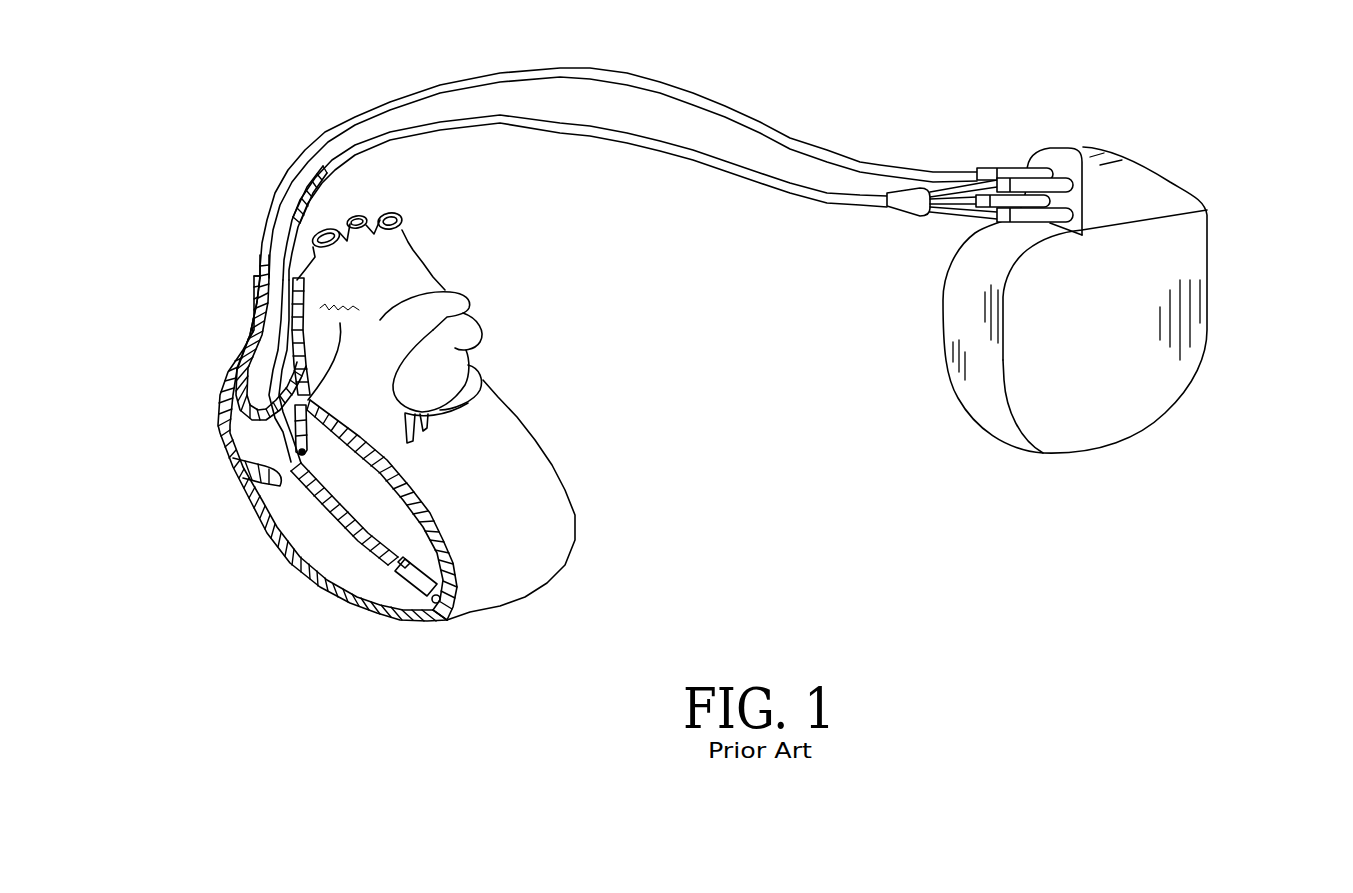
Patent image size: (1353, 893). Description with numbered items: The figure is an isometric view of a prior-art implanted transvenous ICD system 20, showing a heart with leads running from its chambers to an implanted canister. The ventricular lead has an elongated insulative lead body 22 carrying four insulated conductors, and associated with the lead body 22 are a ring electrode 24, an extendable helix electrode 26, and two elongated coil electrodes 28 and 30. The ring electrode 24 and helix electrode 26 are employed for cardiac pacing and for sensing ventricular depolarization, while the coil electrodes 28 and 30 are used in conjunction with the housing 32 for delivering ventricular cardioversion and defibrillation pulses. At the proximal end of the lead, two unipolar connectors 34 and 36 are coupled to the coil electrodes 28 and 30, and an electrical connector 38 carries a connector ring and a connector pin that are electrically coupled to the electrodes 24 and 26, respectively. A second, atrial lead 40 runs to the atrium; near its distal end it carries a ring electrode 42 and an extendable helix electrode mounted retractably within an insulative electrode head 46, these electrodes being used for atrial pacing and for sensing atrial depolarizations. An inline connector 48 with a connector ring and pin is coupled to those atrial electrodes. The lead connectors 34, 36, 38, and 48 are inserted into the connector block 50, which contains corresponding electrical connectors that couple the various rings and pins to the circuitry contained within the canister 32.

The transvenous ICD system 20 is at (1230, 300).
The lead body 22 is at (775, 180).
The ring electrode 24 is at (397, 573).
The extendable helix electrode 26 is at (442, 604).
The coil electrode 28 is at (322, 508).
The coil electrode 30 is at (305, 198).
The housing 32 is at (1097, 417).
The unipolar connector 34 is at (1035, 186).
The unipolar connector 36 is at (1031, 220).
The electrical connector 38 is at (955, 213).
The second lead 40 is at (857, 168).
The ring electrode 42 is at (260, 402).
The insulative electrode head 46 is at (288, 382).
The inline connector 48 is at (997, 168).
The connector block 50 is at (1157, 173).